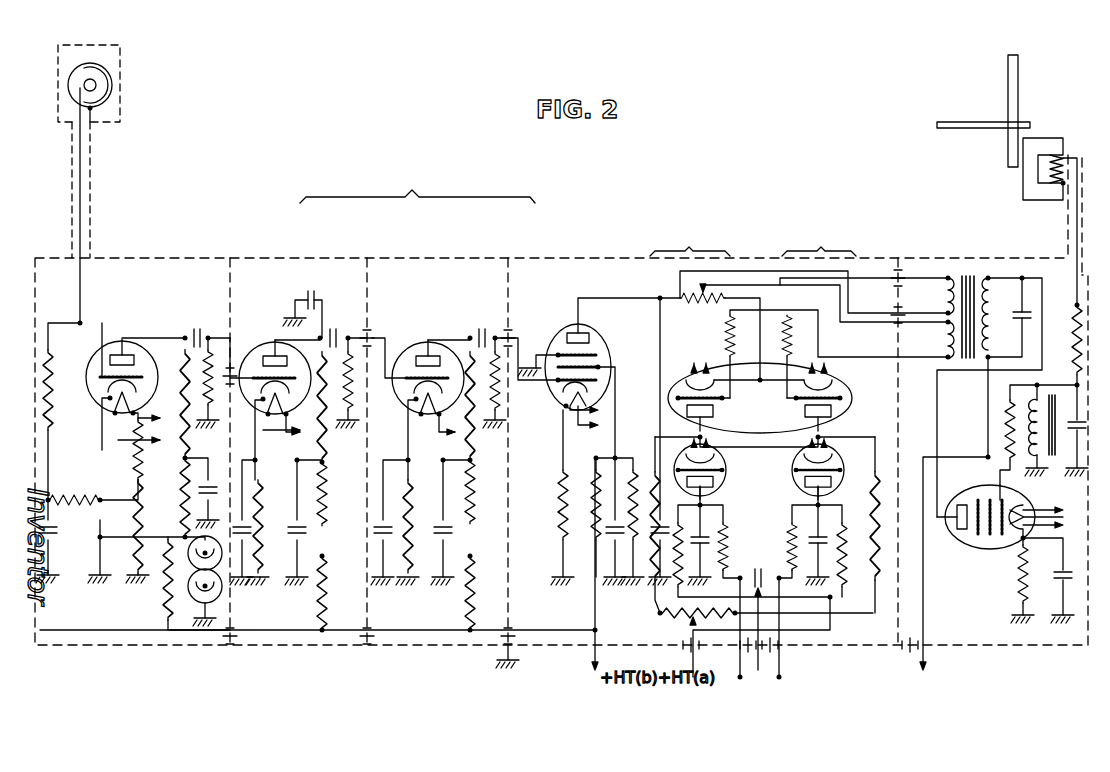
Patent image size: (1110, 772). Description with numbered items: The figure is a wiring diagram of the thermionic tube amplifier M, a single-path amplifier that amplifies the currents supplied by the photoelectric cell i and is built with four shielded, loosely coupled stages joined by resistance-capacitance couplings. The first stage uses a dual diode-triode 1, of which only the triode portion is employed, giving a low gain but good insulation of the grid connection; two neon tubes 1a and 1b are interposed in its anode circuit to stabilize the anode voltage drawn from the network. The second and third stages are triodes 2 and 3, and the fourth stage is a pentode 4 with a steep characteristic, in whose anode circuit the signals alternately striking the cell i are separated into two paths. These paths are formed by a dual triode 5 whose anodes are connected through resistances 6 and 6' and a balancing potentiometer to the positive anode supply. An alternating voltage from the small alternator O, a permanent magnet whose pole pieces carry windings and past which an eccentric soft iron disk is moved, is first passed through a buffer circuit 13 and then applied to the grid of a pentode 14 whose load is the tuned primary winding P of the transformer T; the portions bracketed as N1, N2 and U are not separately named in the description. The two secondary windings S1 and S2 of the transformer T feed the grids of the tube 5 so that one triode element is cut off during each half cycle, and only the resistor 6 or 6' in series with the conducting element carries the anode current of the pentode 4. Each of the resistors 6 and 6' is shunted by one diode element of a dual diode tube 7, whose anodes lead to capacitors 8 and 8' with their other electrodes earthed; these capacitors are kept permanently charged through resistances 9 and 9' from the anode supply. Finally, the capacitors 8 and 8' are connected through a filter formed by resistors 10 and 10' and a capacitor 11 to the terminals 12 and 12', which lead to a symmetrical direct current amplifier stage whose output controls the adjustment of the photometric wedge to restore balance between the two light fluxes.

The photoelectric cell i is at (120, 93).
The dual diode-triode 1 is at (145, 362).
The neon tube 1a is at (186, 560).
The neon tube 1b is at (193, 597).
The triode 2 is at (297, 362).
The triode 3 is at (446, 362).
The pentode 4 is at (572, 333).
The dual triode 5 is at (766, 393).
The resistance 6 is at (644, 540).
The resistance 6' is at (894, 561).
The dual diode tube 7 is at (756, 462).
The capacitor 8 is at (766, 591).
The capacitor 8' is at (830, 593).
The resistance 9 is at (736, 577).
The resistance 9' is at (854, 593).
The resistor 10 is at (731, 541).
The resistor 10' is at (784, 541).
The capacitor 11 is at (761, 625).
The terminal 12 is at (729, 632).
The terminal 12' is at (794, 632).
The buffer circuit 13 is at (1057, 392).
The pentode 14 is at (1032, 492).
The amplifier device M is at (417, 186).
The network N1 is at (799, 312).
The network N2 is at (864, 256).
The secondary winding S1 is at (947, 337).
The secondary winding S2 is at (947, 290).
The transformer T is at (967, 278).
The tuned primary winding P is at (992, 315).
The alternator O is at (1040, 130).
The output stage U is at (984, 580).